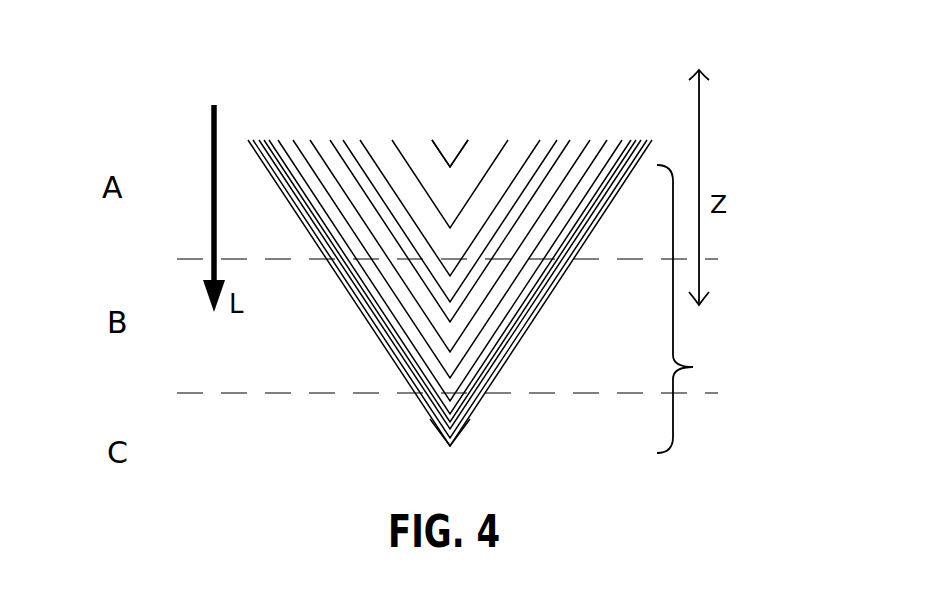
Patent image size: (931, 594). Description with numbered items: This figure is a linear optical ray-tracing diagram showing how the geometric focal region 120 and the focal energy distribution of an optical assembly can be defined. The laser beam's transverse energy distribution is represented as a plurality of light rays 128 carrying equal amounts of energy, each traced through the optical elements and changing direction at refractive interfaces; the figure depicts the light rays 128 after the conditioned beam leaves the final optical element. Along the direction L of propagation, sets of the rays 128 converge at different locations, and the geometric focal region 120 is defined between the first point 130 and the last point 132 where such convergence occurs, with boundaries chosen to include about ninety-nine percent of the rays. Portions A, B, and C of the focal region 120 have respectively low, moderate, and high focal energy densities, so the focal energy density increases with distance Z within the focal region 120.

The geometric focal region 120 is at (708, 309).
The light rays 128 is at (320, 205).
The first point 130 is at (450, 166).
The last point 132 is at (448, 447).